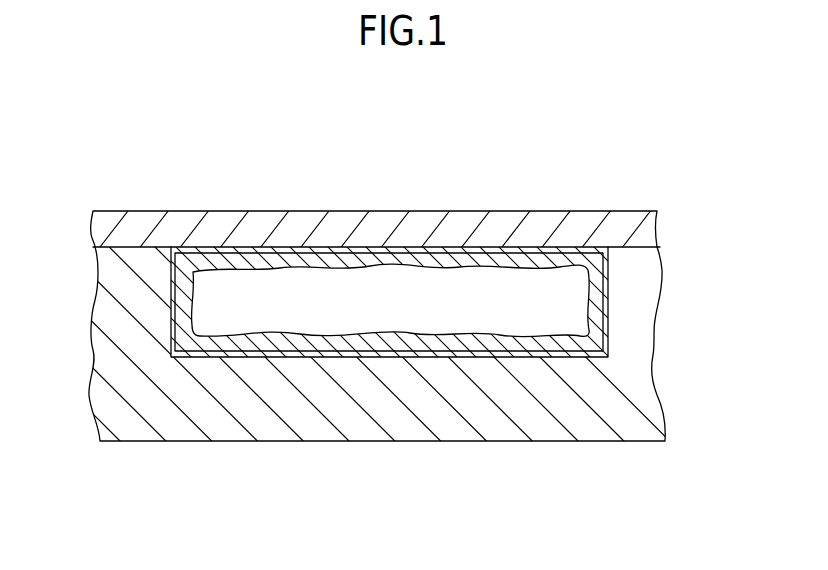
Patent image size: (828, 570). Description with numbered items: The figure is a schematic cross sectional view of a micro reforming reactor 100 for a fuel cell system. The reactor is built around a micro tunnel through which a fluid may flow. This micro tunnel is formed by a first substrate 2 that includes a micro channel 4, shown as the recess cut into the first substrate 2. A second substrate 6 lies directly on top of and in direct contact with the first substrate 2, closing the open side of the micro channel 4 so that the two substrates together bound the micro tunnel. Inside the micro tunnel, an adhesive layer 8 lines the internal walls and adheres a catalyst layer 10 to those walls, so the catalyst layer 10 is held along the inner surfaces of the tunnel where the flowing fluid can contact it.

The micro reforming reactor 100 is at (477, 156).
The first substrate 2 is at (636, 308).
The micro channel 4 is at (587, 357).
The second substrate 6 is at (627, 235).
The adhesive layer 8 is at (182, 323).
The catalyst layer 10 is at (185, 270).